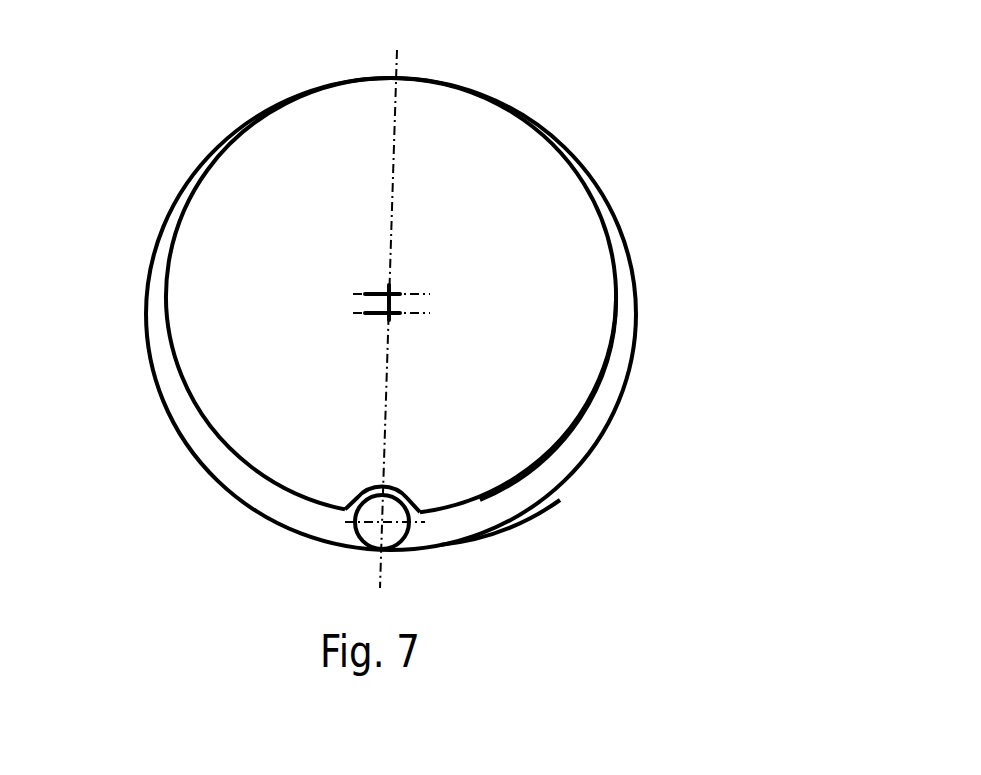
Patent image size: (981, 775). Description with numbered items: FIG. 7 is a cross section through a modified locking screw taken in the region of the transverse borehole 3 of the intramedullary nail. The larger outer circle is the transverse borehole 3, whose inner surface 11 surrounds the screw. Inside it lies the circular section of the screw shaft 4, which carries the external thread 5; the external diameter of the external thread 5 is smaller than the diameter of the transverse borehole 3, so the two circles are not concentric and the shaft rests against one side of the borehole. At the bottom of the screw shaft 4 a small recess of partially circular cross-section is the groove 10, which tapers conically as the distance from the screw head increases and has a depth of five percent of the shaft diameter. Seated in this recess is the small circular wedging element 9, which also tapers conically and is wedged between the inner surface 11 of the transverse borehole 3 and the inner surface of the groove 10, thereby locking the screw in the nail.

The transverse borehole 3 is at (248, 488).
The screw shaft 4 is at (275, 222).
The external thread 5 is at (540, 460).
The wedging element 9 is at (370, 537).
The groove 10 is at (357, 496).
The inner surface 11 is at (498, 527).